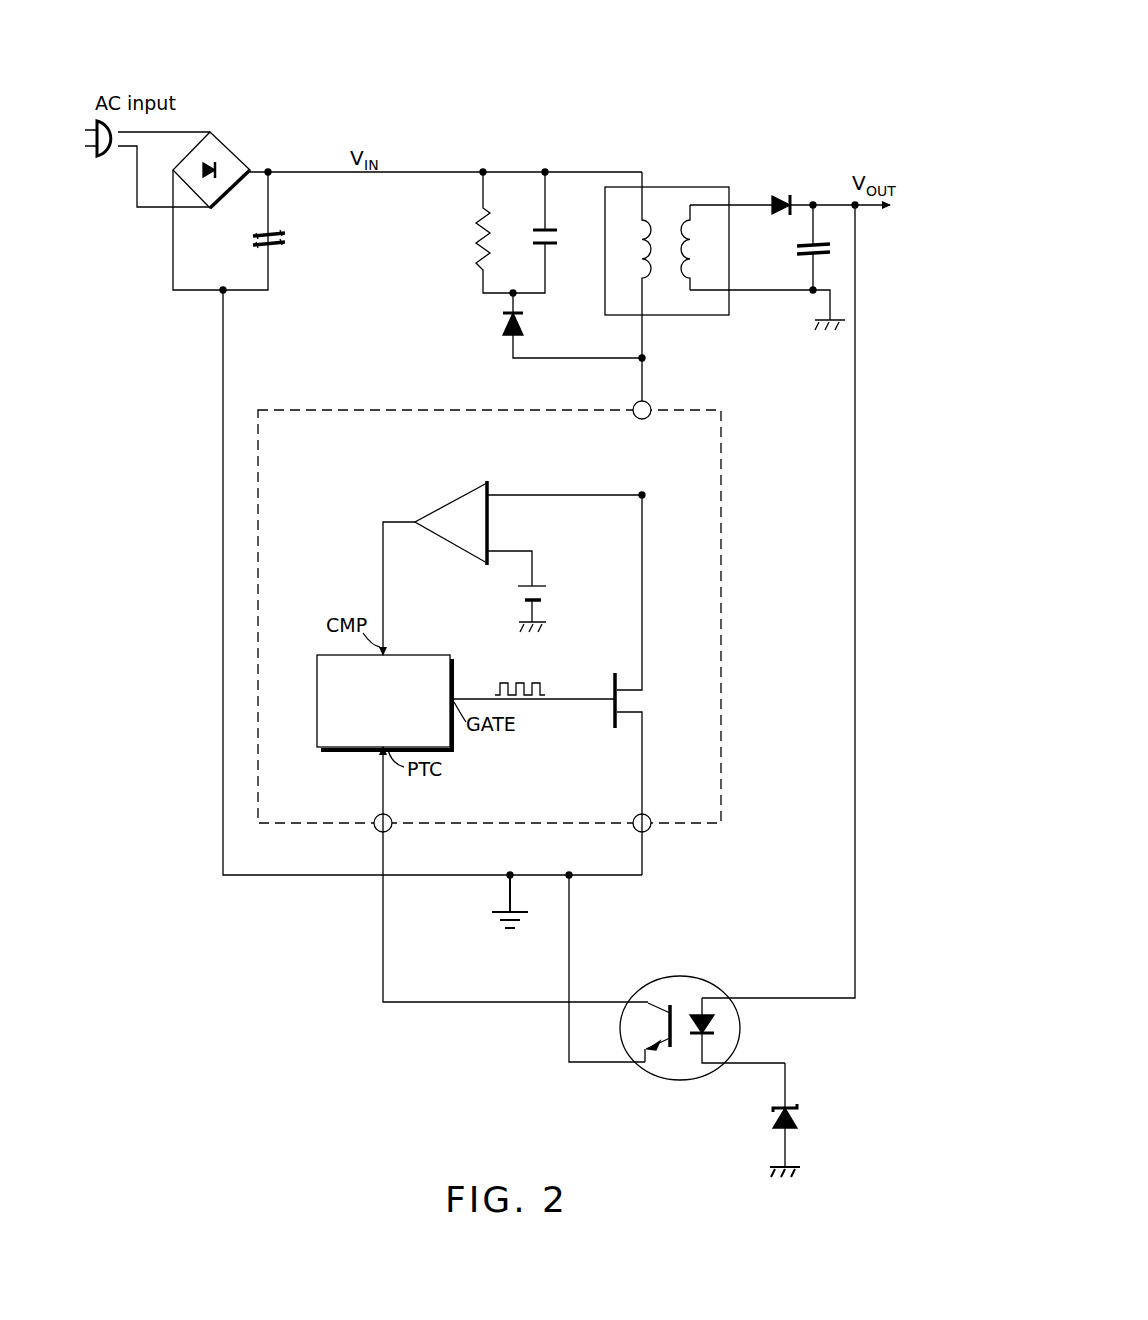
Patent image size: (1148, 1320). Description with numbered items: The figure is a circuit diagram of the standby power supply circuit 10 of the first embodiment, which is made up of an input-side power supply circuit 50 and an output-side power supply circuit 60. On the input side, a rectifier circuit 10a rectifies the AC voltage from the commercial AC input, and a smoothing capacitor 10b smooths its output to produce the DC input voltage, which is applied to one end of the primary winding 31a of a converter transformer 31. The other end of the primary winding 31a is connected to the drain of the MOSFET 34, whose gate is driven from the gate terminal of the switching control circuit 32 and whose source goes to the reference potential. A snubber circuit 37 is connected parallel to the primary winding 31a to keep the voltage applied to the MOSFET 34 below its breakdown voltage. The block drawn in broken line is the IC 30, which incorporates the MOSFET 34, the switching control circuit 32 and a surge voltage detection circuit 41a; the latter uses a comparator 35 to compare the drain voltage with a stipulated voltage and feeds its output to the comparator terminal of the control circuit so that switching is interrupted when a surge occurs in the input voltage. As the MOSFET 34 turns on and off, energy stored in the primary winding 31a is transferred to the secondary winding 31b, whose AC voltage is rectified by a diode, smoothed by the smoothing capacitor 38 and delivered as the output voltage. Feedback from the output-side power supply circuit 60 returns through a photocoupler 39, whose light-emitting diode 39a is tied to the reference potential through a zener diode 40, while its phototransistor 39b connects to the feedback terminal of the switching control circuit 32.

The standby power supply circuit 10 is at (456, 95).
The rectifier circuit 10a is at (227, 147).
The smoothing capacitor 10b is at (287, 243).
The IC 30 is at (722, 790).
The converter transformer 31 is at (692, 271).
The primary winding 31a is at (640, 270).
The secondary winding 31b is at (687, 280).
The switching control circuit 32 is at (314, 722).
The MOSFET 34 is at (632, 722).
The comparator 35 is at (490, 522).
The snubber circuit 37 is at (500, 200).
The smoothing capacitor 38 is at (797, 250).
The photocoupler 39 is at (695, 1001).
The light-emitting diode 39a is at (735, 1025).
The phototransistor 39b is at (640, 1022).
The zener diode 40 is at (765, 1122).
The surge voltage detection circuit 41a is at (528, 487).
The input-side power supply circuit 50 is at (626, 137).
The output-side power supply circuit 60 is at (807, 102).